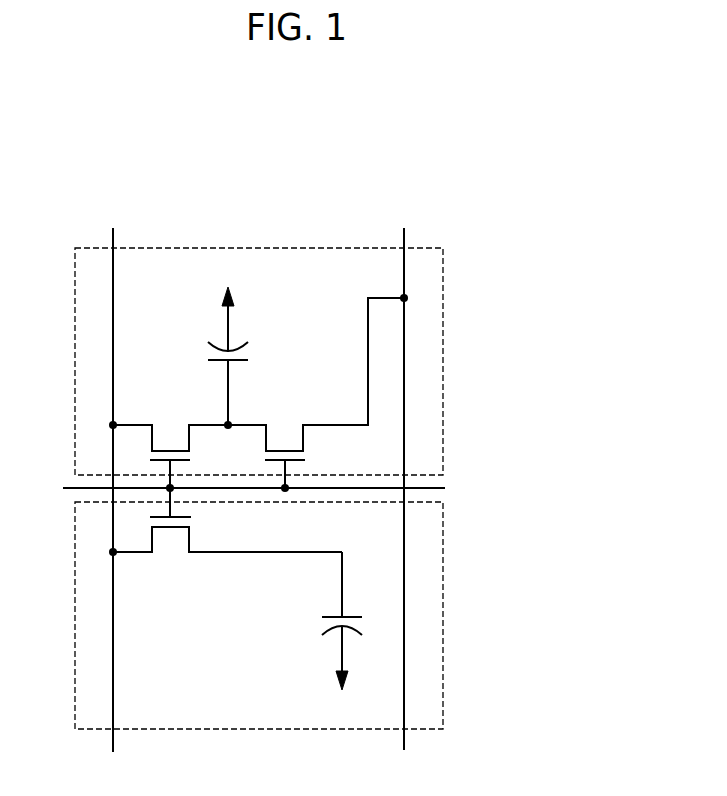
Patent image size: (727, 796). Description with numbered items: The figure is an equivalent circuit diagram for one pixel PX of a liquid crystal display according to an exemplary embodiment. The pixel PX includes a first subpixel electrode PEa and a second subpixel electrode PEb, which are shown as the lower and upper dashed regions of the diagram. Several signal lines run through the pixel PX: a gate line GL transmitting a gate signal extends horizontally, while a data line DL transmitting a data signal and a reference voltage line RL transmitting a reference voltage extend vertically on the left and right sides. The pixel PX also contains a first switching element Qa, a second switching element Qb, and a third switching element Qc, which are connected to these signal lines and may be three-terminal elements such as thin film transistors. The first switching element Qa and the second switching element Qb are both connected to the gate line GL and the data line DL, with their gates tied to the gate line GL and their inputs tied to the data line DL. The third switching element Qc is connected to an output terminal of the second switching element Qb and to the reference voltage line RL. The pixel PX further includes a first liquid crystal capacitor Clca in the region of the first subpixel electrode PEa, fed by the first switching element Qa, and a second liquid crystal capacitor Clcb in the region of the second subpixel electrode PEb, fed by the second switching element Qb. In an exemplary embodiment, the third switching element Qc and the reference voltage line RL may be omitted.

The data line DL is at (113, 475).
The reference voltage line RL is at (405, 472).
The gate line GL is at (238, 487).
The first switching element Qa is at (227, 535).
The second switching element Qb is at (170, 441).
The third switching element Qc is at (314, 393).
The first liquid crystal capacitor Clca is at (312, 621).
The second liquid crystal capacitor Clcb is at (256, 356).
The first subpixel electrode PEa is at (443, 615).
The second subpixel electrode PEb is at (443, 362).
The pixel PX is at (535, 345).